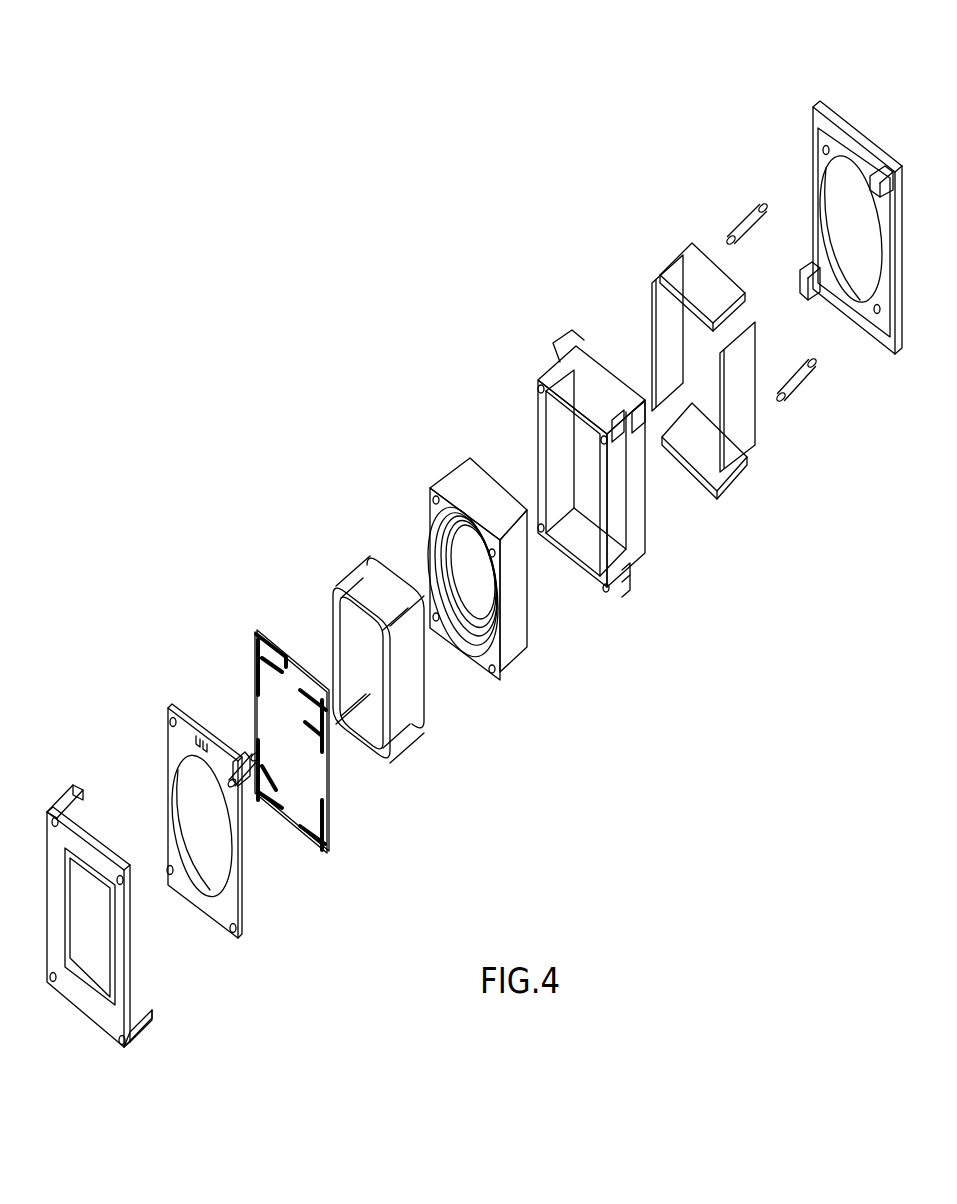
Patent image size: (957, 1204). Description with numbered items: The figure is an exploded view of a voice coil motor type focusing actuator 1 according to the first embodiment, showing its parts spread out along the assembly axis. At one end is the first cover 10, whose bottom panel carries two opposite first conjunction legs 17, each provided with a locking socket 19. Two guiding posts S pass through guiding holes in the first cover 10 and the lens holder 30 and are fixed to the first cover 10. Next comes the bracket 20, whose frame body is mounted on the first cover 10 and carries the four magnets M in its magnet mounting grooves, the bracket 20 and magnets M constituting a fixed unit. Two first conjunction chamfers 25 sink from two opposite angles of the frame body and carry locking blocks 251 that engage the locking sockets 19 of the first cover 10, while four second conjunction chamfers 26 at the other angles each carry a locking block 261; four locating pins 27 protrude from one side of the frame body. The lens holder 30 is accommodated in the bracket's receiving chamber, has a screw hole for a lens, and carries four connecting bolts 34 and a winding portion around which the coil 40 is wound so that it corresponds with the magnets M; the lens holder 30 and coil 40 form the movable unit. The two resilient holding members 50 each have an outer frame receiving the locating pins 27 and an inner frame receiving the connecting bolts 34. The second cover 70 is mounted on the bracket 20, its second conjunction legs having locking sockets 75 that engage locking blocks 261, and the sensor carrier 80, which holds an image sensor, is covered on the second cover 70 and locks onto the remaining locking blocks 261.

The camera module 1 is at (369, 329).
The first cover 10 is at (793, 85).
The first conjunction leg 17 is at (802, 268).
The locking socket 19 is at (823, 272).
The guiding post S is at (790, 362).
The magnet M is at (648, 295).
The bracket 20 is at (602, 427).
The first conjunction chamfer 25 is at (640, 428).
The locking block 251 is at (634, 422).
The second conjunction chamfer 26 is at (600, 375).
The locking block 261 is at (618, 395).
The locating pin 27 is at (539, 385).
The lens holder 30 is at (477, 528).
The connecting bolt 34 is at (434, 492).
The coil 40 is at (351, 534).
The resilient holding member 50 is at (247, 598).
The locking socket 75 is at (243, 786).
The second cover 70 is at (158, 679).
The sensor carrier 80 is at (56, 746).